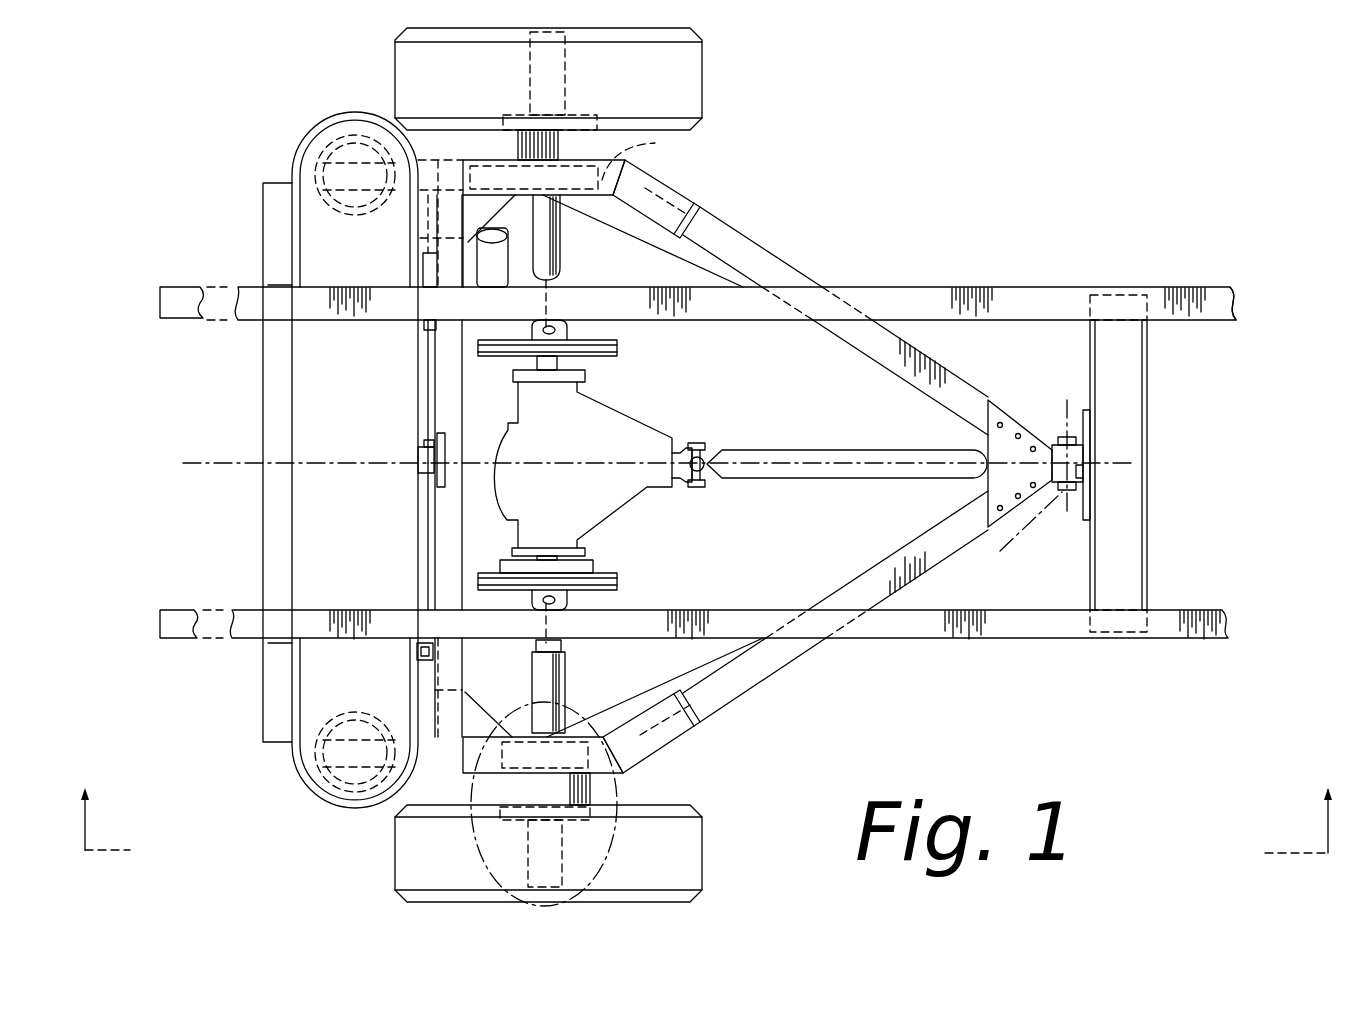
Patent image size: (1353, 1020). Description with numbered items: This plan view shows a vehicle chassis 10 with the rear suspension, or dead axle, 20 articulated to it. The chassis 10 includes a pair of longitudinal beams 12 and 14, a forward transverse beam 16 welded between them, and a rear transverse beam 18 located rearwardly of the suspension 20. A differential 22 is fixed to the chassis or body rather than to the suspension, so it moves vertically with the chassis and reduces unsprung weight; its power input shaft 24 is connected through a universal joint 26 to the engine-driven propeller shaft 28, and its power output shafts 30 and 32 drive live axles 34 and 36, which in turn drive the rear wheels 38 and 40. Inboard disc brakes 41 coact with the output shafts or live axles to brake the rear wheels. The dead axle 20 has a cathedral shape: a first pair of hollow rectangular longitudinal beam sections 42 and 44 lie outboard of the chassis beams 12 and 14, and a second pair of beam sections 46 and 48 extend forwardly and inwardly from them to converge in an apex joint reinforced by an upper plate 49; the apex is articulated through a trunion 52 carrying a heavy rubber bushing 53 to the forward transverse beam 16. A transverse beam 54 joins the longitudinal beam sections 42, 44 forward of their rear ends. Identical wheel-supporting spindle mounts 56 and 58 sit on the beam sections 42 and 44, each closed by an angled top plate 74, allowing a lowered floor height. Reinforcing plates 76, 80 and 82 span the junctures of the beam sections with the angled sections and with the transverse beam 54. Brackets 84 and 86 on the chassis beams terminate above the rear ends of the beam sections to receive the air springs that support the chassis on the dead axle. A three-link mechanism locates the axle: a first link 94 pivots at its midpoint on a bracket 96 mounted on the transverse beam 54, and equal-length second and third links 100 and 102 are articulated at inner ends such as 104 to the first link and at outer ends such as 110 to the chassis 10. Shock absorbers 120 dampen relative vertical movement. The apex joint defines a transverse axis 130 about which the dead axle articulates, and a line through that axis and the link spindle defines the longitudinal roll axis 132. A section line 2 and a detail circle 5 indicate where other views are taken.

The vehicle chassis 10 is at (1218, 288).
The longitudinal beam 12 is at (1043, 296).
The longitudinal beam 14 is at (1032, 640).
The forward transverse beam 16 is at (1128, 511).
The rear transverse beam 18 is at (272, 514).
The rear suspension 20 is at (795, 272).
The differential 22 is at (627, 423).
The power input shaft 24 is at (691, 487).
The universal joint pin 26 is at (704, 470).
The propeller shaft 28 is at (769, 452).
The power output shaft 30 is at (548, 550).
The power output shaft 32 is at (550, 362).
The live axle 34 is at (565, 658).
The live axle 36 is at (548, 240).
The rear wheel 38 is at (405, 858).
The rear wheel 40 is at (685, 60).
The inboard mounted disc brakes 41 is at (603, 570).
The longitudinal beam section 42 is at (650, 771).
The longitudinal beam section 44 is at (617, 346).
The beam section 46 is at (894, 567).
The beam section 48 is at (930, 378).
The upper plate 49 is at (1024, 427).
The trunion member 52 is at (1080, 512).
The rubber bushing 53 is at (1075, 452).
The transverse beam 54 is at (452, 420).
The spindle mount 56 is at (590, 727).
The spindle mount 58 is at (478, 158).
The angled top plate member 74 is at (668, 206).
The upper reinforcing plate 76 is at (641, 226).
The reinforcing plate 80 is at (478, 262).
The reinforcing plate 82 is at (477, 210).
The bracket 84 is at (302, 778).
The bracket 86 is at (302, 158).
The first link 94 is at (428, 445).
The bracket 96 is at (437, 489).
The second link 100 is at (423, 370).
The third link 102 is at (423, 560).
The inner end 104 is at (422, 470).
The outer end 110 is at (418, 660).
The shock absorbing device 120 is at (428, 326).
The transverse axis 130 is at (1009, 531).
The longitudinal roll axis 132 is at (222, 462).
The detail view circle 5 is at (620, 830).
The section line 2- 2 is at (717, 817).